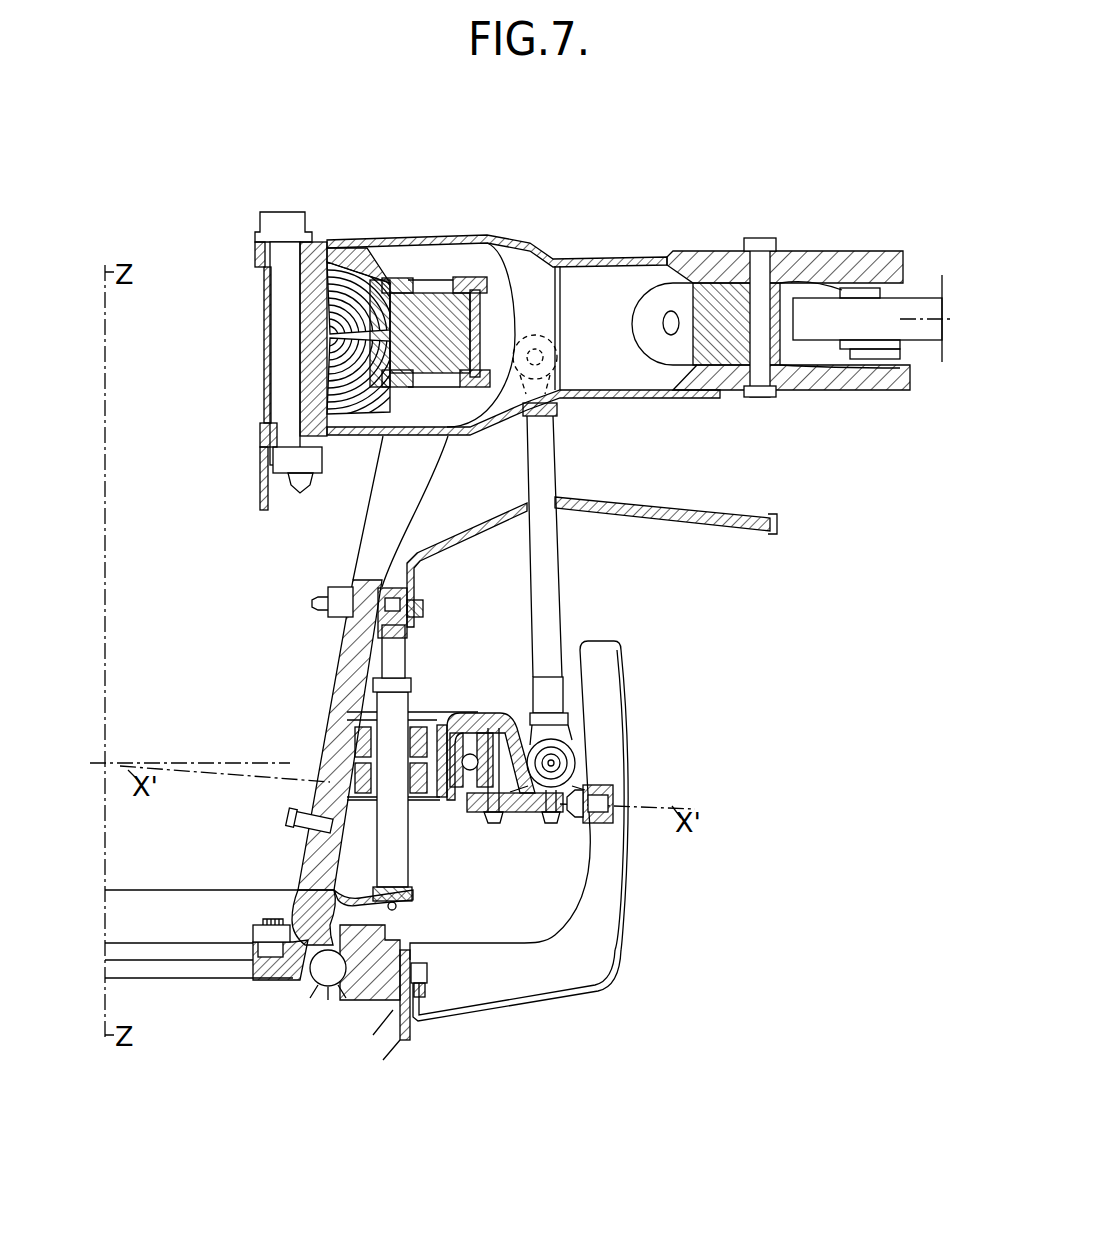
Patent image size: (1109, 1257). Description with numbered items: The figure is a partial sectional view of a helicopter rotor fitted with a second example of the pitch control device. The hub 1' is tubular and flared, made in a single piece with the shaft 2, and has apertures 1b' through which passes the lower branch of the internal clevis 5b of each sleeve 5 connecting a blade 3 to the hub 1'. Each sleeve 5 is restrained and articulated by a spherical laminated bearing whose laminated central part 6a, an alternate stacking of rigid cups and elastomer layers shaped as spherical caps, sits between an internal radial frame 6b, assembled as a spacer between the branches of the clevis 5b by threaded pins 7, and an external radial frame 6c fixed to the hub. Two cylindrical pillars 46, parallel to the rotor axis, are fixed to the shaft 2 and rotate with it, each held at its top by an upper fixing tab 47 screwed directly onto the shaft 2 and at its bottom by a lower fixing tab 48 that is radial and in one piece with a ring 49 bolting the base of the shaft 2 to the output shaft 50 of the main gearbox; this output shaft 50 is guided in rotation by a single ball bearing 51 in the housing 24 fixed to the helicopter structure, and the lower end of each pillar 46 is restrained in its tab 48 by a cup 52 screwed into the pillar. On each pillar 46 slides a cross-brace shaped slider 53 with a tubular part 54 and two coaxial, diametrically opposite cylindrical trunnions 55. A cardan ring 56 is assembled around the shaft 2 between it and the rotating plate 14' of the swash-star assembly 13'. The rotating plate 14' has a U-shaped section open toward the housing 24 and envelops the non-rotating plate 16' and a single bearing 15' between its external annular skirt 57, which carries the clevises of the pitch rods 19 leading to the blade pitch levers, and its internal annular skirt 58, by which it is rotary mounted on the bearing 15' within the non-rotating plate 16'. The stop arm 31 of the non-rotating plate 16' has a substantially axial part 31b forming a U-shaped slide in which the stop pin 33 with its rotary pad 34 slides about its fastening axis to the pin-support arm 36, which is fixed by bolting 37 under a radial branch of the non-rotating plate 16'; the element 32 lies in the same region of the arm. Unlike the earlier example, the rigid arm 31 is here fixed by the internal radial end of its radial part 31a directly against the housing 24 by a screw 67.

The hub 1' is at (440, 285).
The apertures of the hub 1b' is at (378, 511).
The shaft 2 is at (340, 683).
The blade 3 is at (805, 322).
The sleeve 5 is at (725, 404).
The internal clevis of the sleeve 5b is at (494, 425).
The laminated central part 6a is at (330, 292).
The internal radial frame 6b is at (268, 316).
The external radial frame 6c is at (371, 290).
The threaded pin 7 is at (287, 278).
The swash-star assembly 13' is at (497, 721).
The rotating plate 14' is at (484, 731).
The bearing 15' is at (453, 800).
The non-rotating plate 16' is at (608, 740).
The pitch rod 19 is at (542, 477).
The housing 24 is at (392, 1005).
The stop arm 31 is at (610, 990).
The radial part of the stop arm 31a is at (517, 1002).
The axial part of the stop arm 31b is at (625, 902).
The cover 32 is at (603, 837).
The stop pin 33 is at (620, 788).
The rotary pad 34 is at (607, 783).
The pin-support arm 36 is at (520, 815).
The bolting 37 is at (497, 832).
The cylindrical pillar 46 is at (392, 660).
The upper fixing tab 47 is at (408, 630).
The lower fixing tab 48 is at (300, 884).
The ring 49 is at (303, 838).
The output shaft of the main gear box 50 is at (300, 973).
The ball bearing 51 is at (328, 975).
The cup 52 is at (410, 908).
The slider 53 is at (443, 685).
The tubular part 54 is at (394, 833).
The cylindrical trunnion 55 is at (358, 762).
The cardan ring 56 is at (355, 778).
The external annular skirt 57 is at (558, 730).
The internal annular skirt 58 is at (445, 770).
The screw 67 is at (428, 995).